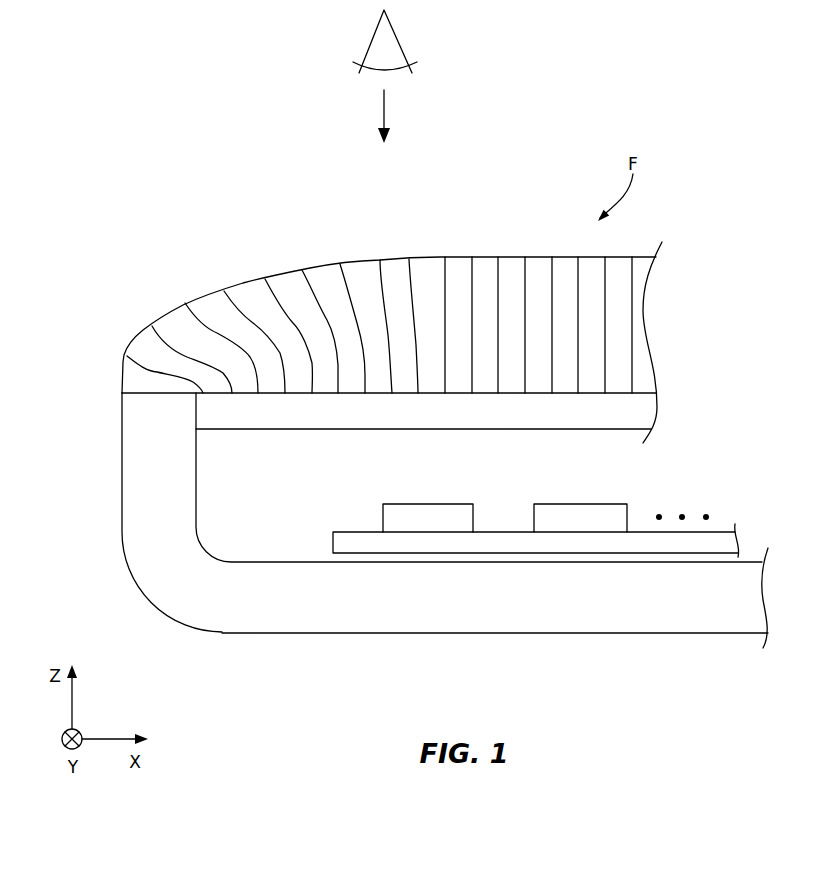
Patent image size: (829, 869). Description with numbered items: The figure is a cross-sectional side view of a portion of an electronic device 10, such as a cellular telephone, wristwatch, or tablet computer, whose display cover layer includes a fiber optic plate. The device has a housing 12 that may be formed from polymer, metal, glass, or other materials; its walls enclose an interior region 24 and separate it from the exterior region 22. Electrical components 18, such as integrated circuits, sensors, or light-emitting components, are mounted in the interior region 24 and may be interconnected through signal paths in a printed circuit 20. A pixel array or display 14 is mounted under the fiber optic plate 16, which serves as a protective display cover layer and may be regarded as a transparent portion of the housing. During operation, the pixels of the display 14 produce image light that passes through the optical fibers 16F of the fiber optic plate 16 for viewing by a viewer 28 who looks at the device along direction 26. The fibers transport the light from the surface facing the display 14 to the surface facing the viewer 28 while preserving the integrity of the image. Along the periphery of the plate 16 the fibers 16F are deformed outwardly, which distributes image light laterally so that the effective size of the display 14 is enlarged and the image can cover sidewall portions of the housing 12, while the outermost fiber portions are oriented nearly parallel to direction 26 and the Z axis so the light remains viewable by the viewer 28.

The electronic device 10 is at (560, 122).
The housing 12 is at (607, 620).
The display 14 is at (637, 413).
The fiber optic plate 16 is at (430, 300).
The optical fibers 16F is at (327, 285).
The electrical components 18 is at (432, 516).
The printed circuit 20 is at (352, 535).
The exterior region 22 is at (203, 216).
The interior region 24 is at (273, 537).
The viewing direction 26 is at (386, 105).
The viewer 28 is at (398, 38).